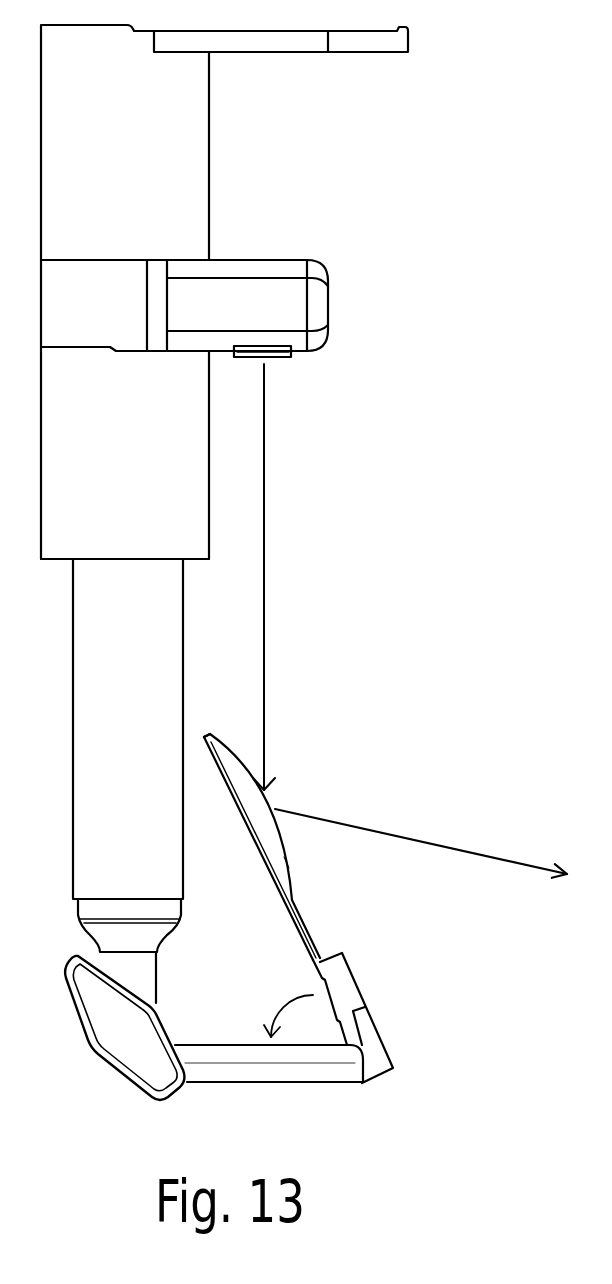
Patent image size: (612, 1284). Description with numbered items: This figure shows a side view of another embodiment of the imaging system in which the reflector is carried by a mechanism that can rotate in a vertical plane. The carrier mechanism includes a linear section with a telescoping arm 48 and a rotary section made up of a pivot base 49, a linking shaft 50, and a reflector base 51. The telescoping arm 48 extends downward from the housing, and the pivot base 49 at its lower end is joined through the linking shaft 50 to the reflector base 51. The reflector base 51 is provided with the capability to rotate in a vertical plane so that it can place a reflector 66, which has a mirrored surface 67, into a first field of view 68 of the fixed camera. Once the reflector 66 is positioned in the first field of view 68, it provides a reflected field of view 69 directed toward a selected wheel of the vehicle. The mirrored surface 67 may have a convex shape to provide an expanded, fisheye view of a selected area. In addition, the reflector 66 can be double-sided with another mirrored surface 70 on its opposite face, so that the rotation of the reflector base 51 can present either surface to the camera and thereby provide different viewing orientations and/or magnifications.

The telescoping arm 48 is at (79, 770).
The pivot base 49 is at (78, 1020).
The linking shaft 50 is at (233, 1083).
The reflector base 51 is at (386, 1040).
The reflector 66 is at (288, 924).
The mirrored surface 67 is at (284, 857).
The first field of view 68 is at (265, 588).
The reflected field of view 69 is at (432, 844).
The another mirrored surface 70 is at (218, 766).